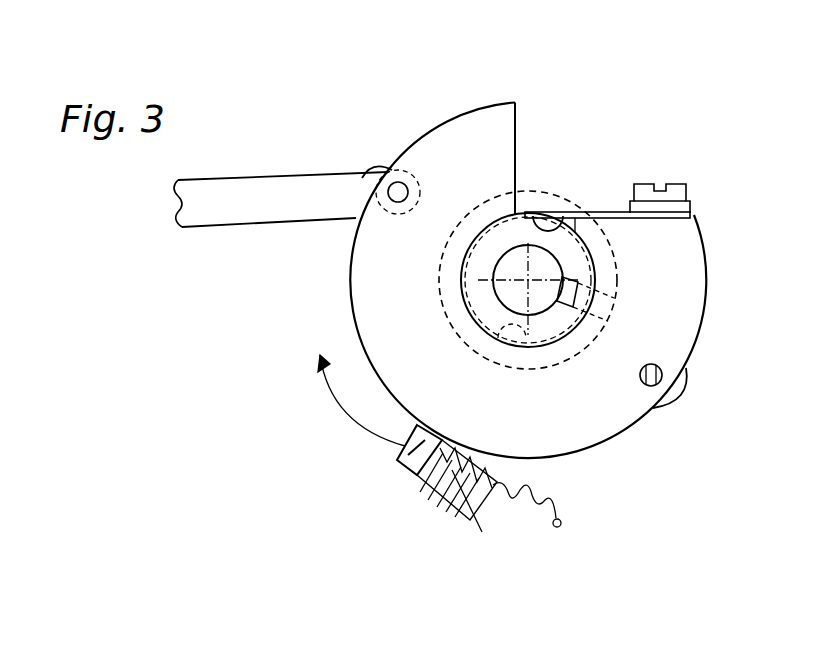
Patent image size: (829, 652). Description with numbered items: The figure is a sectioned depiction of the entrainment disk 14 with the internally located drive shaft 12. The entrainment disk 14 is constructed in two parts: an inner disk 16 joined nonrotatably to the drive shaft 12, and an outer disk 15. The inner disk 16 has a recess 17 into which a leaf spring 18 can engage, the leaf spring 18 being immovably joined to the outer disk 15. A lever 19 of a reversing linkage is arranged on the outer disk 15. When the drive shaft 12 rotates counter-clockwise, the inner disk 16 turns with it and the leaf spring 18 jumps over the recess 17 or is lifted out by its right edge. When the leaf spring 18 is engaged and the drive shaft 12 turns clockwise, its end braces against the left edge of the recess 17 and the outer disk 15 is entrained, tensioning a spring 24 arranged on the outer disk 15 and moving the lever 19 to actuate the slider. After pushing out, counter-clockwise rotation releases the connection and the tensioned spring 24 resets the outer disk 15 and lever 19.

The drive shaft 12 is at (510, 292).
The entrainment disk 14 is at (548, 105).
The outer disk 15 is at (437, 158).
The inner disk 16 is at (478, 266).
The recess 17 is at (548, 222).
The leaf spring 18 is at (560, 217).
The lever 19 is at (265, 197).
The spring 24 is at (540, 490).